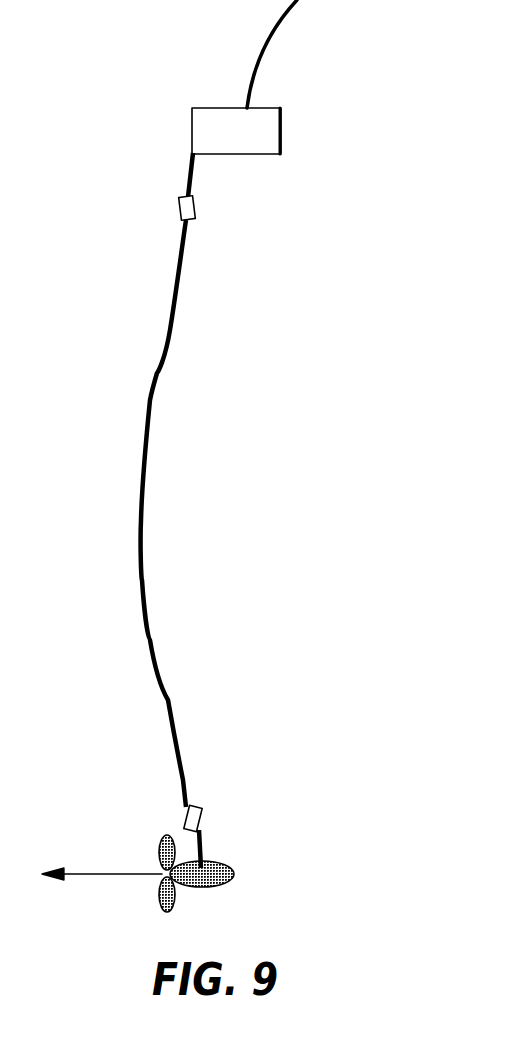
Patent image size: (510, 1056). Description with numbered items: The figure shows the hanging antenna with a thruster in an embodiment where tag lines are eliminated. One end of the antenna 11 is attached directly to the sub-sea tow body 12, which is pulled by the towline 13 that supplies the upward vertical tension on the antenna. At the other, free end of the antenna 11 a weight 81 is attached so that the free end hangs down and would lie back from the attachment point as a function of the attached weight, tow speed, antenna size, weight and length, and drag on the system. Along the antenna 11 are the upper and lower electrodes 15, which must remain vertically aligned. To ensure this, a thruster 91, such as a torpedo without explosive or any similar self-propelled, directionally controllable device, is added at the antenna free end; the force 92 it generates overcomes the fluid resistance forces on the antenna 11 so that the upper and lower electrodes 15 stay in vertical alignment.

The antenna 11 is at (160, 372).
The sub-sea tow body 12 is at (268, 154).
The towline 13 is at (293, 8).
The upper and lower electrodes 15 is at (197, 218).
The weight 81 is at (227, 862).
The thruster 91 is at (158, 905).
The force 92 is at (92, 872).